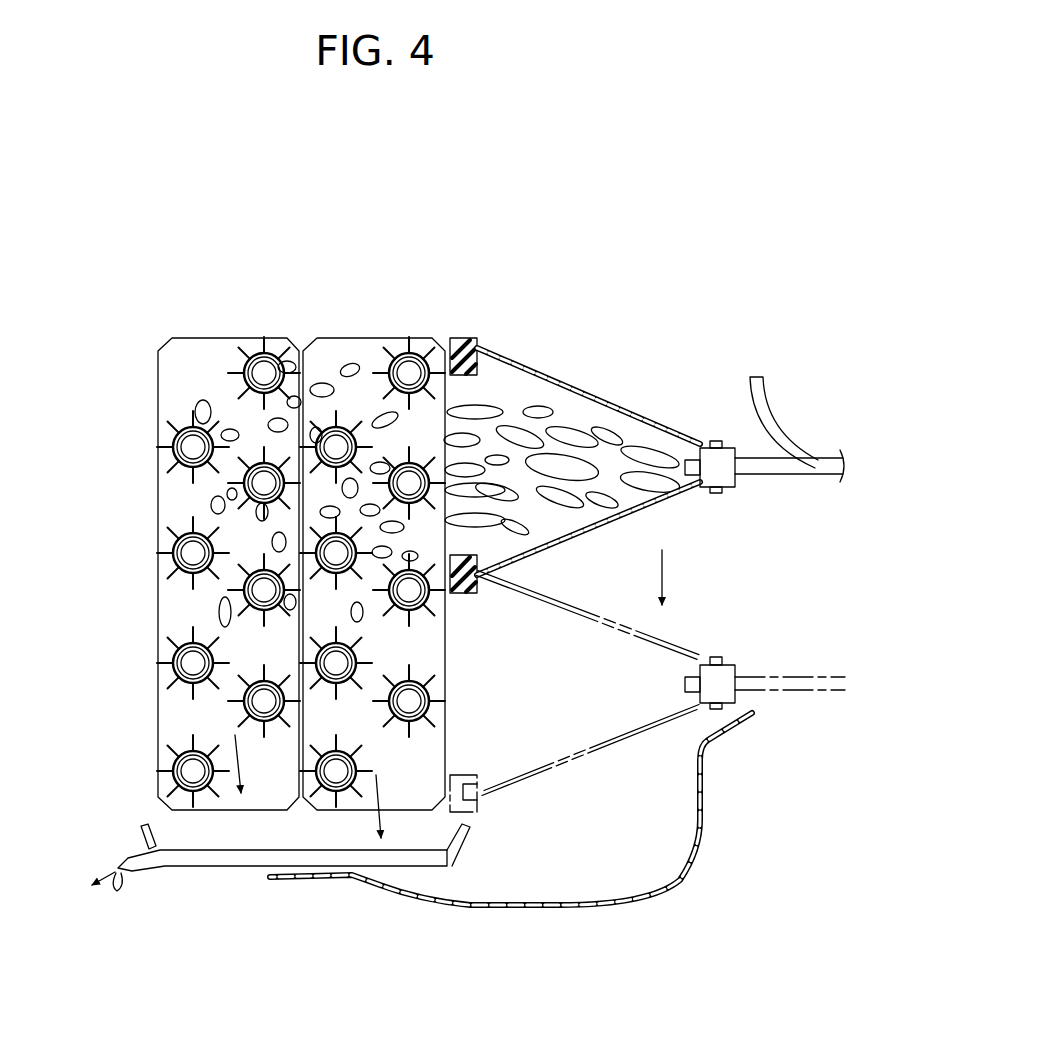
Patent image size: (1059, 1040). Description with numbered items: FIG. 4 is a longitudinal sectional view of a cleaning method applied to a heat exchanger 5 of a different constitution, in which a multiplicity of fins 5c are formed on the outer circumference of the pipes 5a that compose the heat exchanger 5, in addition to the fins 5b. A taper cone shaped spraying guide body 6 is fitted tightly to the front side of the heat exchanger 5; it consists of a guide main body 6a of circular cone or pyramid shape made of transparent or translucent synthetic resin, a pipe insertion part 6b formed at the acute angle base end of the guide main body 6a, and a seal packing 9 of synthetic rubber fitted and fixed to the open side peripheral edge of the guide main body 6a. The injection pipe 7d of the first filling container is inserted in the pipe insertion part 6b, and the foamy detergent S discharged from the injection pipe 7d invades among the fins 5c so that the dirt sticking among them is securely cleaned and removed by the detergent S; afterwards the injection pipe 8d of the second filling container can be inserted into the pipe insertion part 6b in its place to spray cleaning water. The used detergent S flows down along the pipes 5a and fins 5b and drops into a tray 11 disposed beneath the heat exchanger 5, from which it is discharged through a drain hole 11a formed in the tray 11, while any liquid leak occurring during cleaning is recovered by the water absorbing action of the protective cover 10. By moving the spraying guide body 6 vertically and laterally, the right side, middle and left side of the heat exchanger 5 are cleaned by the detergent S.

The heat exchanger 5 is at (205, 320).
The pipes 5a is at (176, 562).
The fins 5b is at (165, 350).
The fins 5c is at (177, 463).
The detergent S is at (205, 398).
The seal packing 9 is at (462, 345).
The spraying guide body 6 is at (598, 384).
The guide main body 6a is at (645, 418).
The pipe insertion part 6b is at (723, 478).
The injection pipe 7d is at (765, 476).
The injection pipe 8d is at (770, 397).
The protective cover 10 is at (665, 883).
The tray 11 is at (215, 870).
The drain hole 11a is at (133, 845).